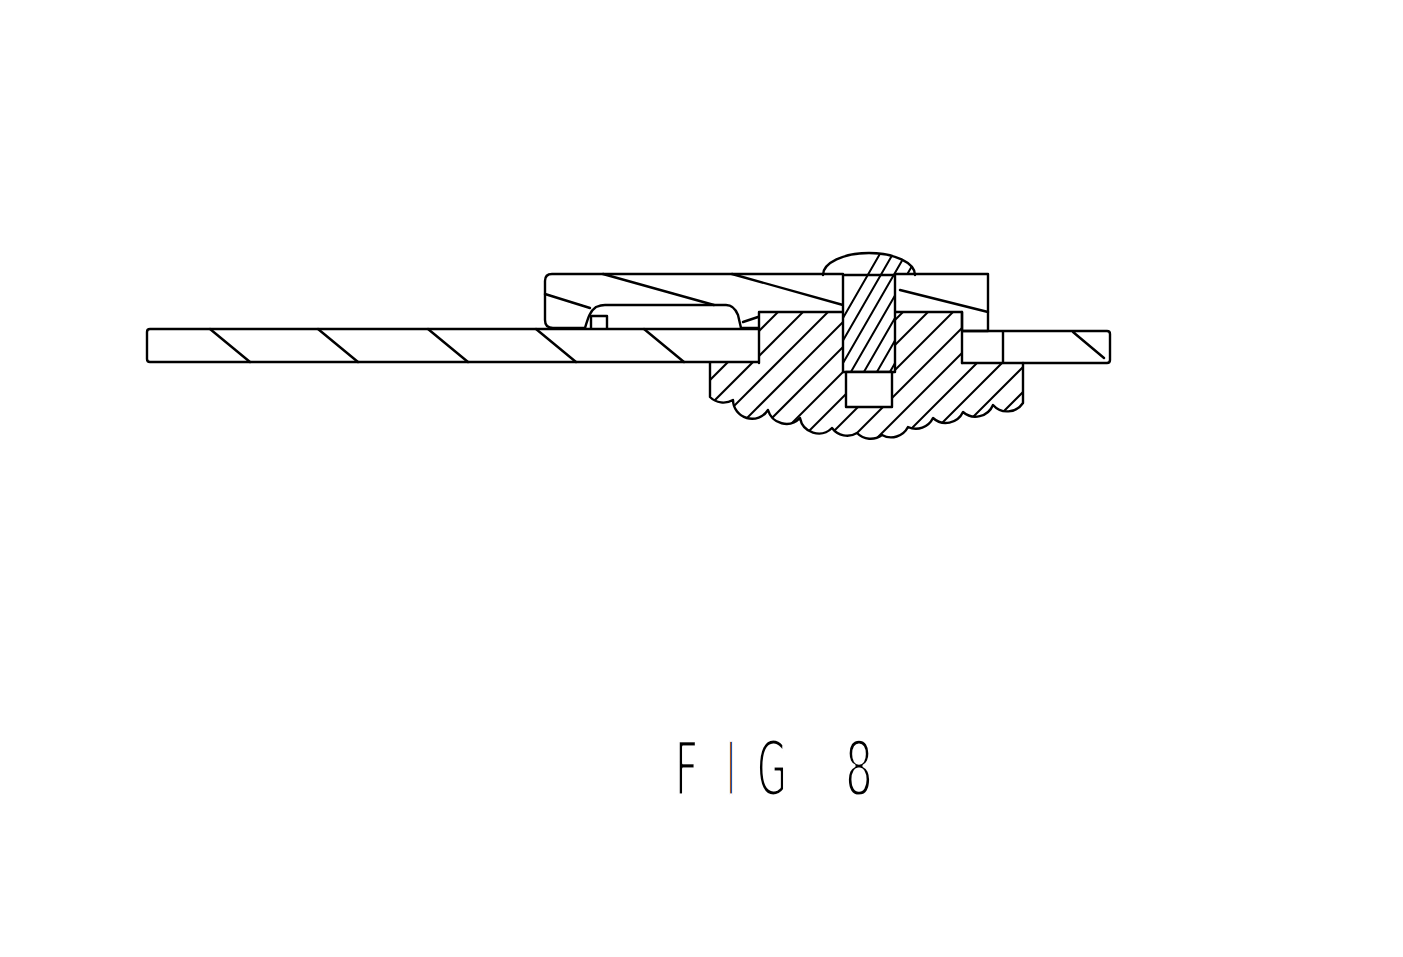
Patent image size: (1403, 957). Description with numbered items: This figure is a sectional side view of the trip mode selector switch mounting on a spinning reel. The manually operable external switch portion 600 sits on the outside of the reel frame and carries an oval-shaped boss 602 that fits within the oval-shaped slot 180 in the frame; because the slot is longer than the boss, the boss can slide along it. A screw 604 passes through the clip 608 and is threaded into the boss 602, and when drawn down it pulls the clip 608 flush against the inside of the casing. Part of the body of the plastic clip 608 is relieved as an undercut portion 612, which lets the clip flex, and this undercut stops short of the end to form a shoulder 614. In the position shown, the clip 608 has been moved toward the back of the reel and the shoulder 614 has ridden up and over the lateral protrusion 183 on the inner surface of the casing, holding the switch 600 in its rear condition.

The oval-shaped slot 180 is at (1003, 343).
The lateral protrusion 183 is at (597, 327).
The external switch portion 600 is at (993, 410).
The boss 602 is at (937, 341).
The screw 604 is at (887, 257).
The clip 608 is at (970, 292).
The undercut portion 612 is at (683, 318).
The shoulder 614 is at (545, 294).